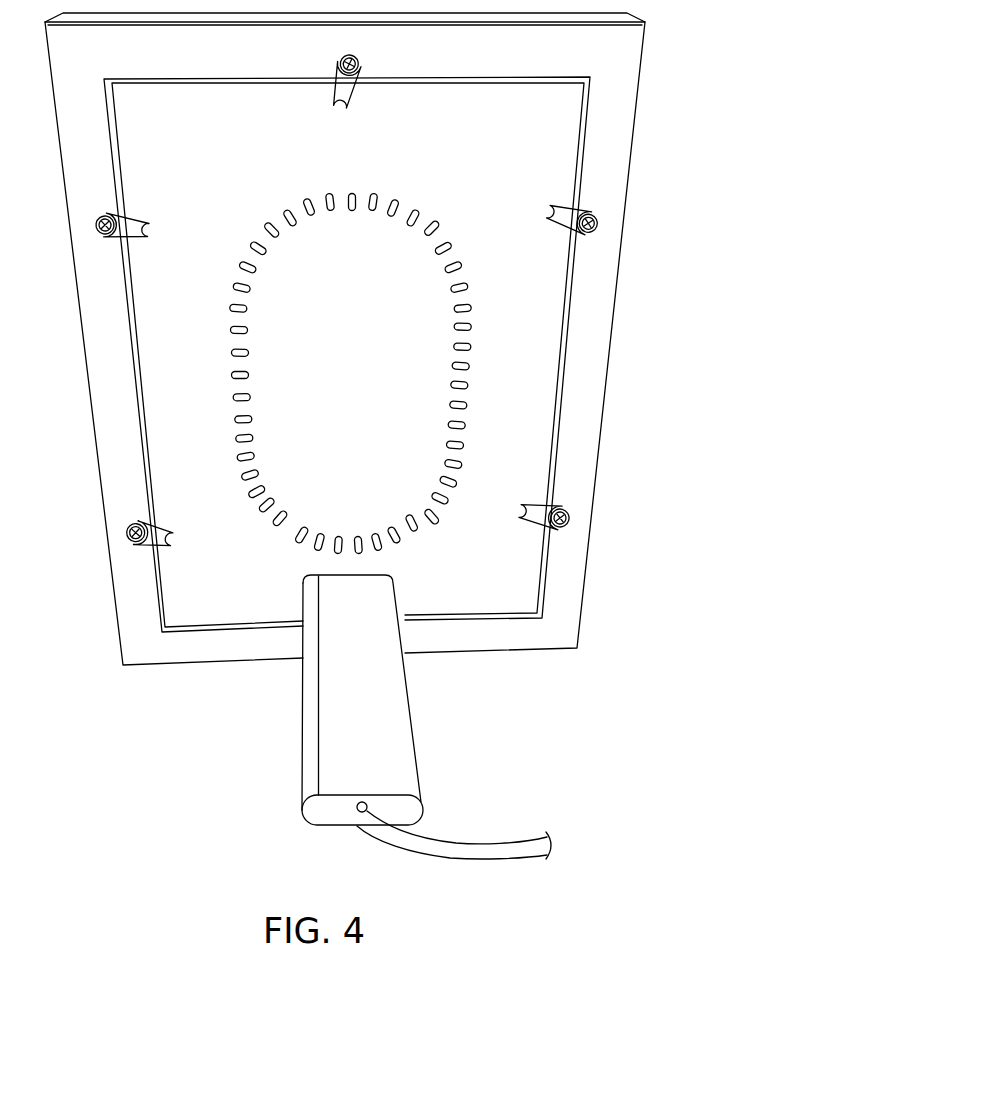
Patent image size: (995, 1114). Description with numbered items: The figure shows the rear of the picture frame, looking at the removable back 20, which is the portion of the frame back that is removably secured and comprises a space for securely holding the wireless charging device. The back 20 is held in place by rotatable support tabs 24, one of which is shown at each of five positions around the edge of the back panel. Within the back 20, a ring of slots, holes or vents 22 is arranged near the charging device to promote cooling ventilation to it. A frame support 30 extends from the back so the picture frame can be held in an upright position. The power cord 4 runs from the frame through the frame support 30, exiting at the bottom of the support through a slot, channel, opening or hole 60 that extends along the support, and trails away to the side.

The power cord 4 is at (488, 837).
The back 20 is at (515, 453).
The slots, holes or vents 22 is at (464, 404).
The rotatable support tabs 24 is at (555, 505).
The frame support 30 is at (338, 712).
The slot, channel, opening or hole 60 is at (357, 815).